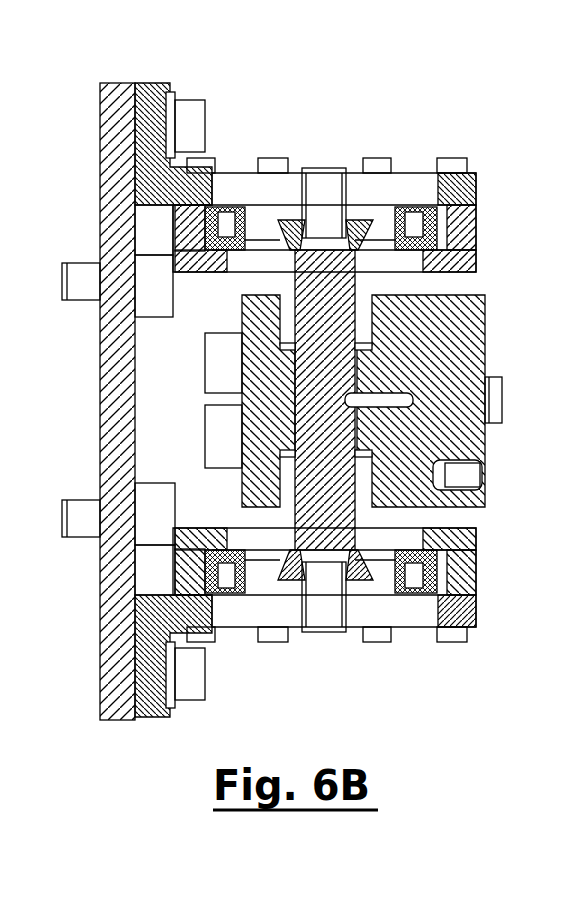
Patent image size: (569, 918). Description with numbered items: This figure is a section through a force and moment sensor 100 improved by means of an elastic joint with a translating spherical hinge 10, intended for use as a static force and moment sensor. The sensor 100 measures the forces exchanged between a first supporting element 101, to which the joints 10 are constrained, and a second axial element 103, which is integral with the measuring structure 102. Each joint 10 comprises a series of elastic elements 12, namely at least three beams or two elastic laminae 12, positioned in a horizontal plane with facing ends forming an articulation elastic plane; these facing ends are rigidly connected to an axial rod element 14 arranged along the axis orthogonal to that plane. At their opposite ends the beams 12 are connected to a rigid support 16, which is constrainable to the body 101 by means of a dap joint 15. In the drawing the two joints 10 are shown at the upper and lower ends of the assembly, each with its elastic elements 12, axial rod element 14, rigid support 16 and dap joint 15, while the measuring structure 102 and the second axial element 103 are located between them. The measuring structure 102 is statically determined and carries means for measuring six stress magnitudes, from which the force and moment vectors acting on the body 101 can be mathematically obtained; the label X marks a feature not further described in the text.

The elastic joint with a translating spherical hinge 10 is at (484, 193).
The elastic elements 12 is at (243, 242).
The axial rod element 14 is at (320, 273).
The dap joint 15 is at (471, 174).
The rigid support 16 is at (458, 262).
The force and moment sensor 100 is at (385, 101).
The first supporting element 101 is at (122, 702).
The measuring structure 102 is at (359, 318).
The second axial element 103 is at (502, 400).
The rotary block X is at (473, 442).